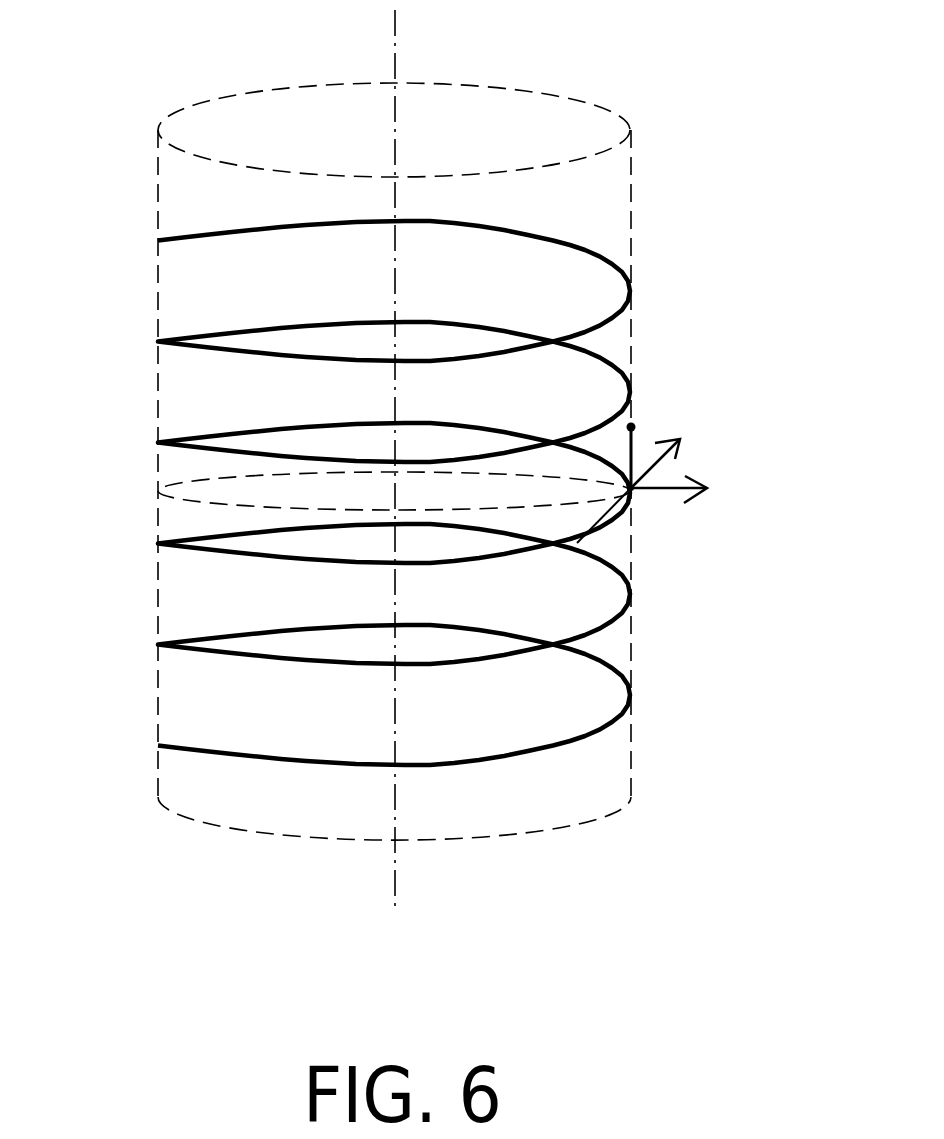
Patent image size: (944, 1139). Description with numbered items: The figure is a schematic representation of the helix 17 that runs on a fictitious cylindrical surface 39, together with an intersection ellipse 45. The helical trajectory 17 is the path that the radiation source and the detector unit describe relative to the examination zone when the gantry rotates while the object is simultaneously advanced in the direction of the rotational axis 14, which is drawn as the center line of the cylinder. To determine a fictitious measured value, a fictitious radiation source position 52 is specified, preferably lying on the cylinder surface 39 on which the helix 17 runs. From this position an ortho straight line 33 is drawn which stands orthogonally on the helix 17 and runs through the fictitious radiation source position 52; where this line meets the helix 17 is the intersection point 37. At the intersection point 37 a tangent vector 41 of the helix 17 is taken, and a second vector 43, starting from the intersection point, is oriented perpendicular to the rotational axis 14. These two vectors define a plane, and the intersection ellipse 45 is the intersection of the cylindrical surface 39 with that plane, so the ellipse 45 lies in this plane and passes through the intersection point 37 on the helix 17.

The rotational axis 14 is at (398, 27).
The helical trajectory 17 is at (200, 237).
The fictitious cylindrical surface 39 is at (632, 230).
The intersection ellipse 45 is at (190, 503).
The fictitious radiation source position 52 is at (634, 425).
The ortho straight line 33 is at (631, 488).
The tangent vector 41 is at (680, 440).
The vector perpendicular to the rotational axis 43 is at (670, 493).
The intersection point 37 is at (637, 492).